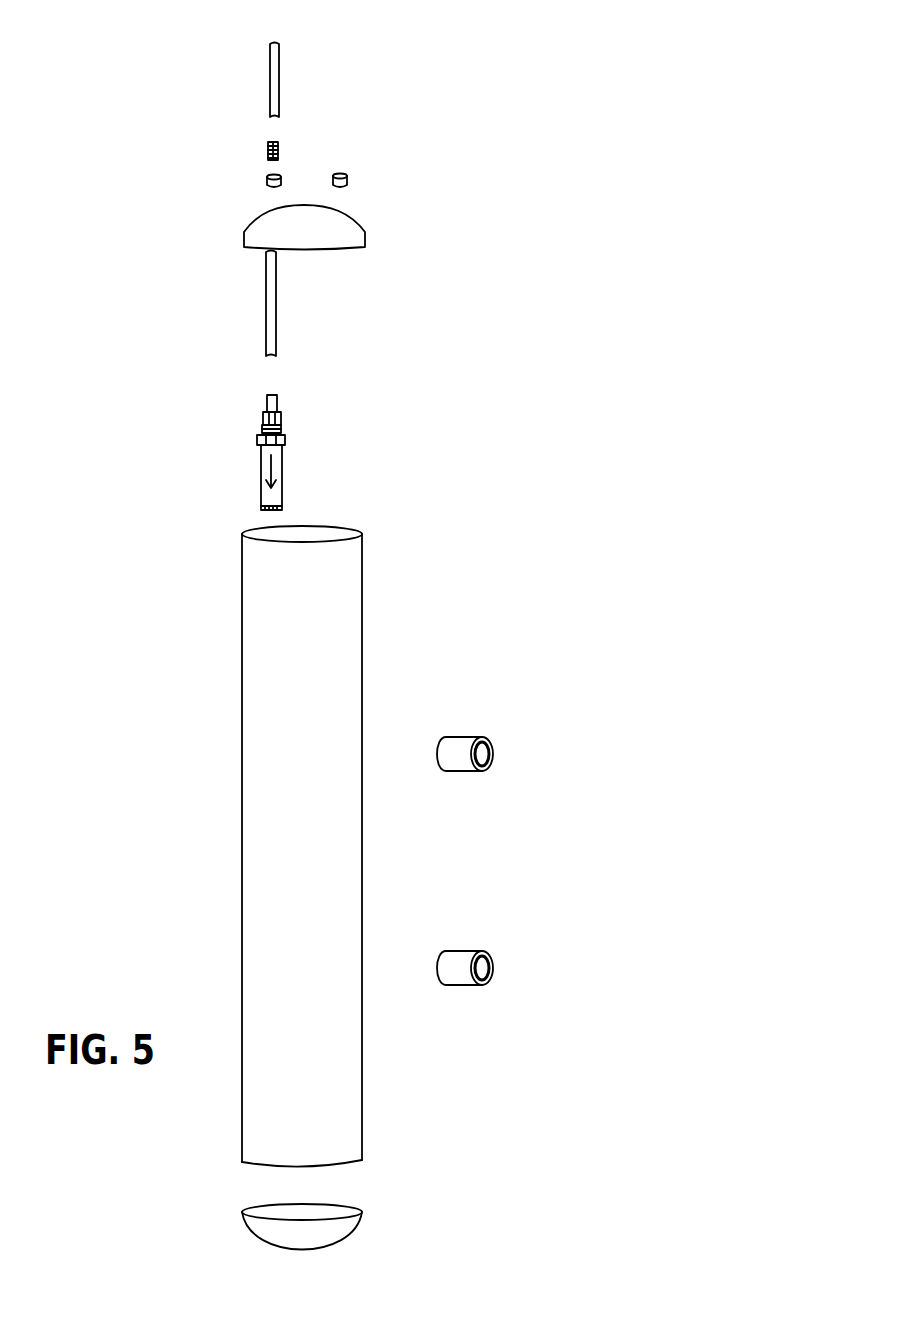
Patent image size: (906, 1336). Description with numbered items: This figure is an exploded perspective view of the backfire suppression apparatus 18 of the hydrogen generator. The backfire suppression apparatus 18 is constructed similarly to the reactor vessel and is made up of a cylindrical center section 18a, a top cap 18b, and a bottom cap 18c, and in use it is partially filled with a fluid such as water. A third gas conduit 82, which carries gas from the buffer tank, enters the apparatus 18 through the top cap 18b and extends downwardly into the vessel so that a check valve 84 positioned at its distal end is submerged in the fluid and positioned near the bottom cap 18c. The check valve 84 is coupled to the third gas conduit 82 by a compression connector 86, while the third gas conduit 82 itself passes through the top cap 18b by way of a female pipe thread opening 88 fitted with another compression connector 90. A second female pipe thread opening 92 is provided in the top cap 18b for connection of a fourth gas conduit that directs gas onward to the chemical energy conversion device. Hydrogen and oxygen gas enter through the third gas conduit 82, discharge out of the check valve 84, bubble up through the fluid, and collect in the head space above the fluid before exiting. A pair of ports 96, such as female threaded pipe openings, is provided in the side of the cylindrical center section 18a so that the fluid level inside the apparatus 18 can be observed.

The backfire suppression apparatus 18 is at (108, 50).
The cylindrical center section 18a is at (362, 556).
The top cap 18b is at (357, 220).
The bottom cap 18c is at (363, 1214).
The third gas conduit 82 is at (279, 70).
The check valve 84 is at (283, 470).
The compression connector 86 is at (278, 415).
The female pipe thread opening 88 is at (281, 178).
The compression connector 90 is at (277, 152).
The female pipe thread opening 92 is at (347, 180).
The ports 96 is at (493, 757).